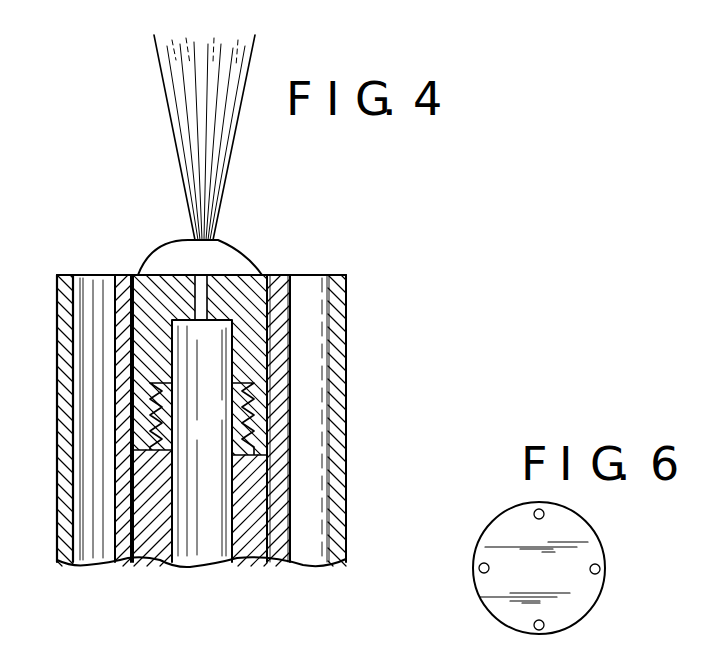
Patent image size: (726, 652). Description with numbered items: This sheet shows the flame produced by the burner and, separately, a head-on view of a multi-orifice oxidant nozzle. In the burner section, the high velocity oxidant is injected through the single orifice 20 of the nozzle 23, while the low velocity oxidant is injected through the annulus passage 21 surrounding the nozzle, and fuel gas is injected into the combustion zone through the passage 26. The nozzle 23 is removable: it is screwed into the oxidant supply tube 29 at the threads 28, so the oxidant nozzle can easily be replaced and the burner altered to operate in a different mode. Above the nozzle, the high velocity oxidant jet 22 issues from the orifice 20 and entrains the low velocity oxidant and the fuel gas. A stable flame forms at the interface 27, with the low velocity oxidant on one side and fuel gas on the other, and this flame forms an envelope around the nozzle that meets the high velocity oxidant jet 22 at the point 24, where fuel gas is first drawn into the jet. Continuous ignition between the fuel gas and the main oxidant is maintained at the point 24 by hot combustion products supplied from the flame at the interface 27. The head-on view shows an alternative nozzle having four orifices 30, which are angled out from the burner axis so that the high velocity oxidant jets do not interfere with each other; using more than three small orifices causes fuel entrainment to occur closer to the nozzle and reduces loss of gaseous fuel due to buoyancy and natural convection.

In FIG. 4, the single orifice 20 is at (208, 276).
In FIG. 4, the annulus passage 21 is at (272, 298).
In FIG. 4, the high velocity oxidant jet 22 is at (174, 134).
In FIG. 4, the nozzle 23 is at (250, 345).
In FIG. 4, the point 24 is at (215, 244).
In FIG. 4, the passage 26 is at (327, 336).
In FIG. 4, the interface 27 is at (162, 253).
In FIG. 4, the threads 28 is at (250, 423).
In FIG. 4, the oxidant supply tube 29 is at (248, 543).
In FIG. 6, the orifices 30 is at (601, 569).